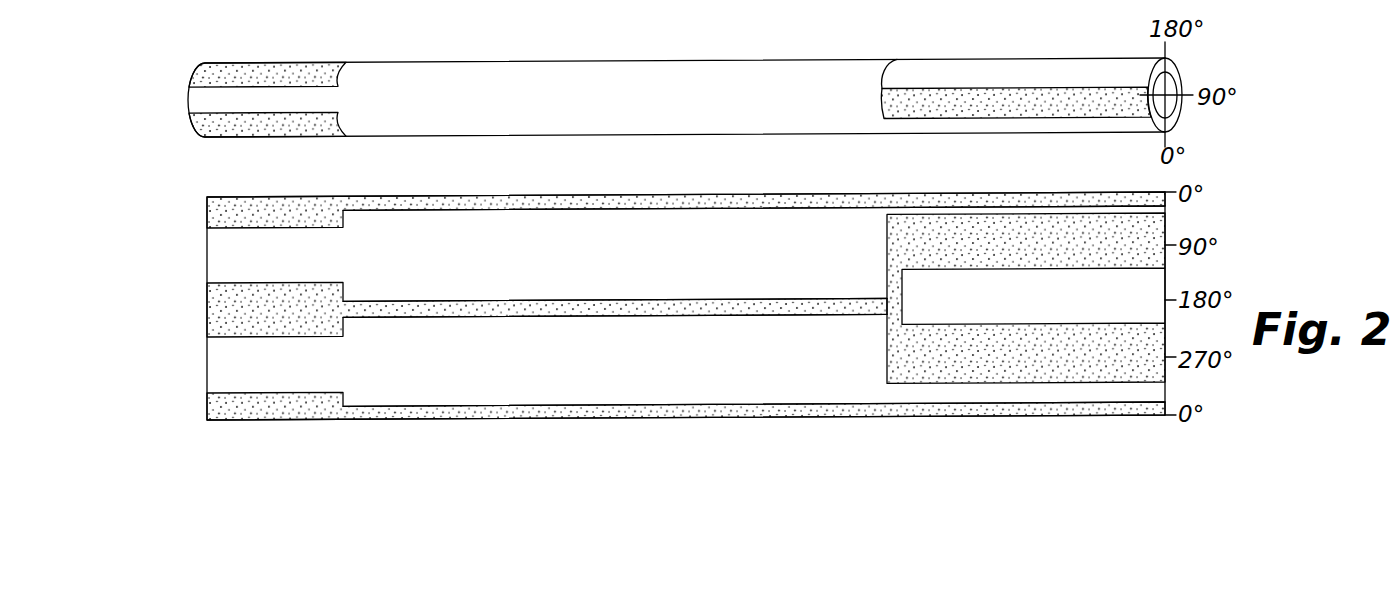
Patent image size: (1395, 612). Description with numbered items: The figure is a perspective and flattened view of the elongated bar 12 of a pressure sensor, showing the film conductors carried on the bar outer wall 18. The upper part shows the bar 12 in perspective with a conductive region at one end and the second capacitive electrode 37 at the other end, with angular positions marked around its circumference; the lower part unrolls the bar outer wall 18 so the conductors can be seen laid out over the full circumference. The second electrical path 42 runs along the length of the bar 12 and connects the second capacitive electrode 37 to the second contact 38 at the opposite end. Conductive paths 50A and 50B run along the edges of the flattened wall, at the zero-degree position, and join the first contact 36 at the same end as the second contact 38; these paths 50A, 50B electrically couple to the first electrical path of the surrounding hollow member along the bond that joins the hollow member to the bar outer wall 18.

The elongated bar 12 is at (642, 56).
The bar outer wall 18 is at (519, 257).
The first contact 36 is at (207, 206).
The second capacitive electrode 37 is at (937, 88).
The second contact 38 is at (218, 325).
The second electrical path 42 is at (783, 60).
The conductive path 50A is at (708, 403).
The conductive path 50B is at (790, 212).